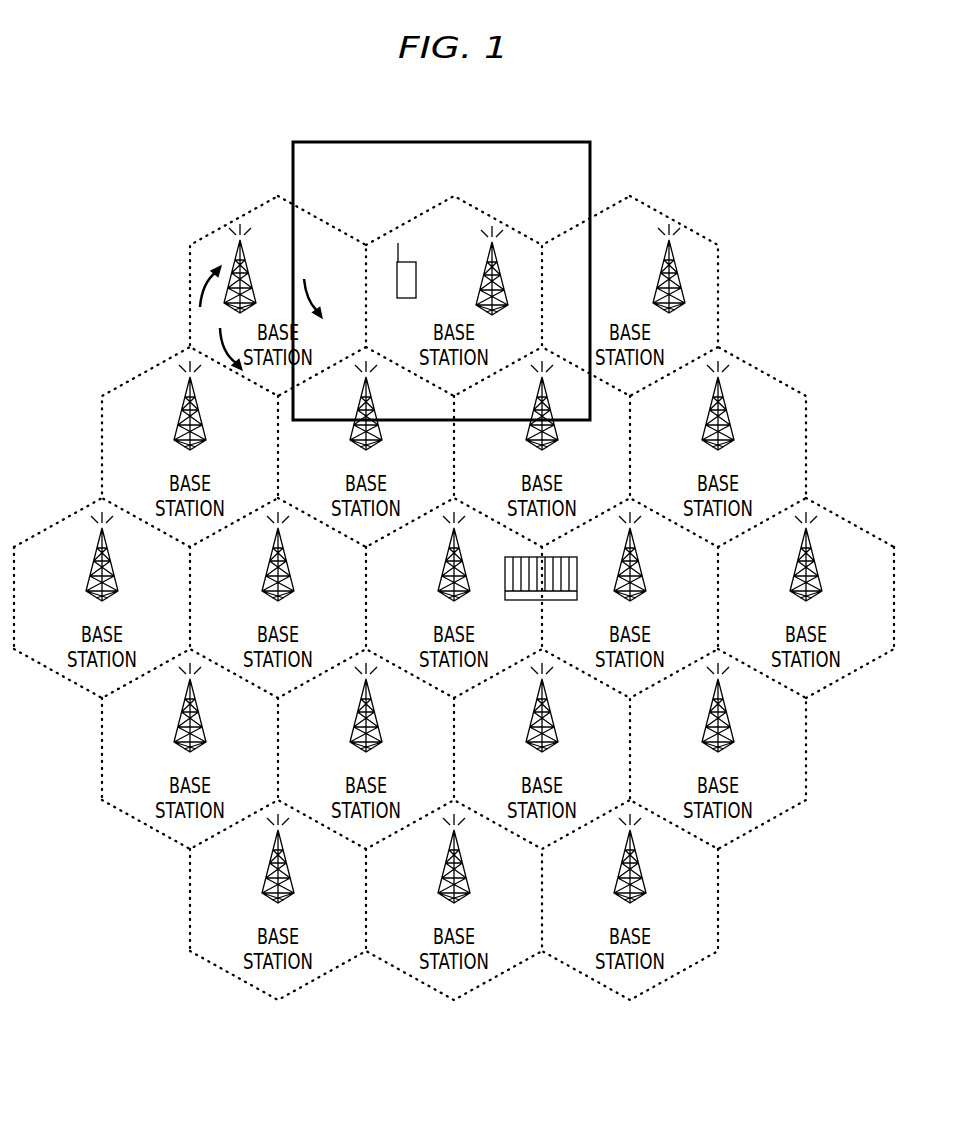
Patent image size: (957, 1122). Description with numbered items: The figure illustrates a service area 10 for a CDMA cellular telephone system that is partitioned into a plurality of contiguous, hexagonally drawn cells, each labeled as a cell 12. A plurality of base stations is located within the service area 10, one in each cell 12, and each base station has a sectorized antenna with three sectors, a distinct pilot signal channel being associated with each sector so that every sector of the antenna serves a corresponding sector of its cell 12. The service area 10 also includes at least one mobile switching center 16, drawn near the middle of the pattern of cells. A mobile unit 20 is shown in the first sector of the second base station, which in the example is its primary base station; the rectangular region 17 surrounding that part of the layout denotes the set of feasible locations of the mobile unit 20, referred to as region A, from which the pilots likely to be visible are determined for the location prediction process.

The service area 10 is at (326, 107).
The cell 12 is at (757, 368).
The mobile switching center (MSC) 16 is at (528, 602).
The region 17 is at (534, 142).
The mobile unit 20 is at (412, 298).